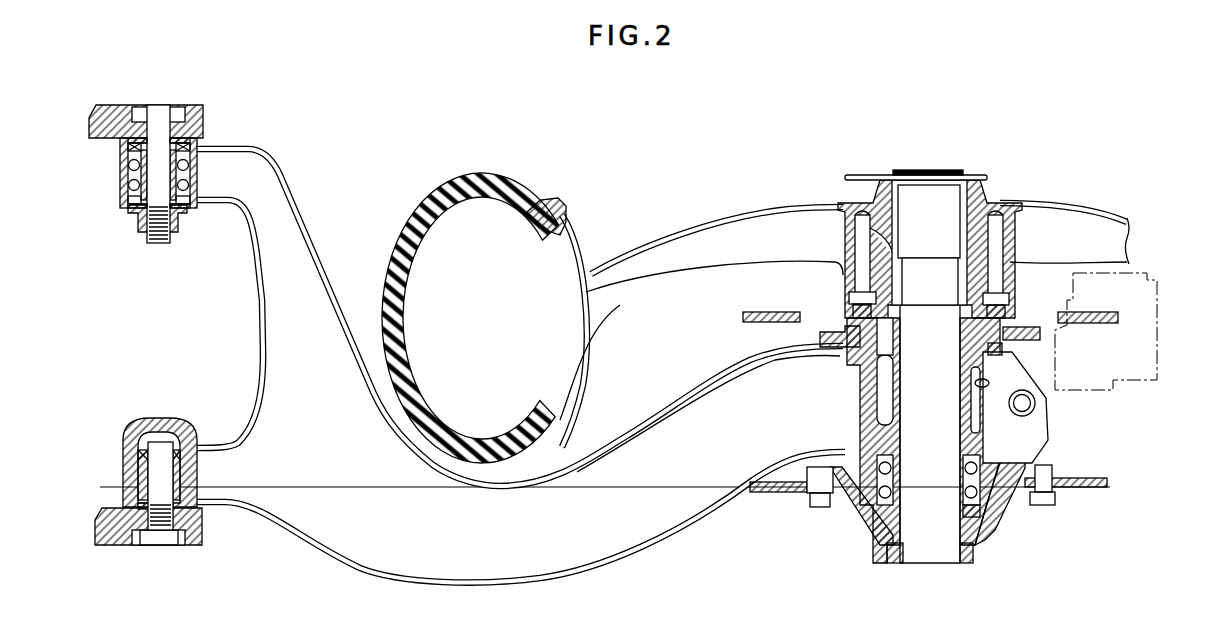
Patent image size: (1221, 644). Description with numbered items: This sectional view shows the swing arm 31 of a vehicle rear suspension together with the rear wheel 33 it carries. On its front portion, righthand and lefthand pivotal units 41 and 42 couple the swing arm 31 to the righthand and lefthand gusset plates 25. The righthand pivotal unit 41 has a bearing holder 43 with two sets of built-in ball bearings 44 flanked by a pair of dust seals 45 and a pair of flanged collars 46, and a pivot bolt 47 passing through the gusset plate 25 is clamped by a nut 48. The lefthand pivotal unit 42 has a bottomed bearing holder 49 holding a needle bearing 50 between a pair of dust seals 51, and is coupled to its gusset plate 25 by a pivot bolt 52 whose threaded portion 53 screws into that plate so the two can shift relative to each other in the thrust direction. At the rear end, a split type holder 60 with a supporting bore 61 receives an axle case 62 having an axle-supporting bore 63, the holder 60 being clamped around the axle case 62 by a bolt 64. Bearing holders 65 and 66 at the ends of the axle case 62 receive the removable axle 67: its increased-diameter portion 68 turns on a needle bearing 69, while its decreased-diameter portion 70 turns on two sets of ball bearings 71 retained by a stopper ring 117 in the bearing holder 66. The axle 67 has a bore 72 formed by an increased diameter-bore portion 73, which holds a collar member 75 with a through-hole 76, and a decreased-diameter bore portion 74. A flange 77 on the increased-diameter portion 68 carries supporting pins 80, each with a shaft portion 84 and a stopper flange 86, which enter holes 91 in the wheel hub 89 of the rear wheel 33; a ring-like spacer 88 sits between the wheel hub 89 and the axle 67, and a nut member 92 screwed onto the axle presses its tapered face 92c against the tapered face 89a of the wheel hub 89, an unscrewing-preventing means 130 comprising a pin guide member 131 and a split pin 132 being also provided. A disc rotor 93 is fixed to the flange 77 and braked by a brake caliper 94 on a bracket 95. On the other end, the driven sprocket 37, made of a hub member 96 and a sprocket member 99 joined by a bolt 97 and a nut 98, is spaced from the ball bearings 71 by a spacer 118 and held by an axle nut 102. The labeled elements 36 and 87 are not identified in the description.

The gusset plate 25 is at (112, 108).
The swing arm 31 is at (285, 156).
The rear wheel 33 is at (670, 236).
The axis 36 is at (653, 490).
The driven sprocket 37 is at (767, 498).
The righthand pivotal unit 41 is at (155, 156).
The lefthand pivotal unit 42 is at (153, 485).
The bearing holder 43 is at (118, 163).
The ball bearings 44 is at (190, 185).
The dust seals 45 is at (200, 105).
The flanged collars 46 is at (173, 143).
The pivot bolt 47 is at (158, 120).
The nut 48 is at (143, 230).
The bottomed bearing holder 49 is at (133, 438).
The needle bearing 50 is at (137, 467).
The dust seals 51 is at (147, 438).
The pivot bolt 52 is at (168, 533).
The threaded portion 53 is at (153, 545).
The split type holder 60 is at (980, 350).
The supporting bore 61 is at (853, 365).
The axle case 62 is at (988, 437).
The axle-supporting bore 63 is at (856, 388).
The bolt 64 is at (1037, 407).
The bearing holder 65 is at (963, 323).
The bearing holder 66 is at (967, 463).
The axle 67 is at (920, 565).
The increased-diameter portion 68 is at (1007, 350).
The needle bearing 69 is at (890, 333).
The decreased-diameter portion 70 is at (983, 537).
The ball bearings 71 is at (893, 493).
The bore 72 is at (922, 195).
The increased diameter-bore portion 73 is at (990, 384).
The decreased-diameter bore portion 74 is at (957, 555).
The collar member 75 is at (875, 252).
The through-hole 76 is at (913, 258).
The flange 77 is at (1007, 297).
The supporting pins 80 is at (847, 283).
The shaft portion 84 is at (850, 310).
The stopper flange 86 is at (1003, 317).
The bracket 87 is at (820, 337).
The ring-like spacer 88 is at (990, 243).
The wheel hub 89 is at (1010, 210).
The tapered face 89a is at (890, 183).
The holes 91 is at (853, 227).
The nut member 92 is at (973, 180).
The tapered face 92c is at (1000, 207).
The disc rotor 93 is at (1118, 318).
The brake caliper 94 is at (1147, 293).
The bracket 95 is at (778, 354).
The hub member 96 is at (850, 500).
The bolt 97 is at (1053, 477).
The nut 98 is at (1053, 503).
The sprocket member 99 is at (787, 493).
The axle nut 102 is at (973, 557).
The stopper ring 117 is at (987, 527).
The spacer 118 is at (873, 540).
The unscrewing-preventing means 130 is at (857, 170).
The pin guide member 131 is at (906, 208).
The split pin 132 is at (943, 170).